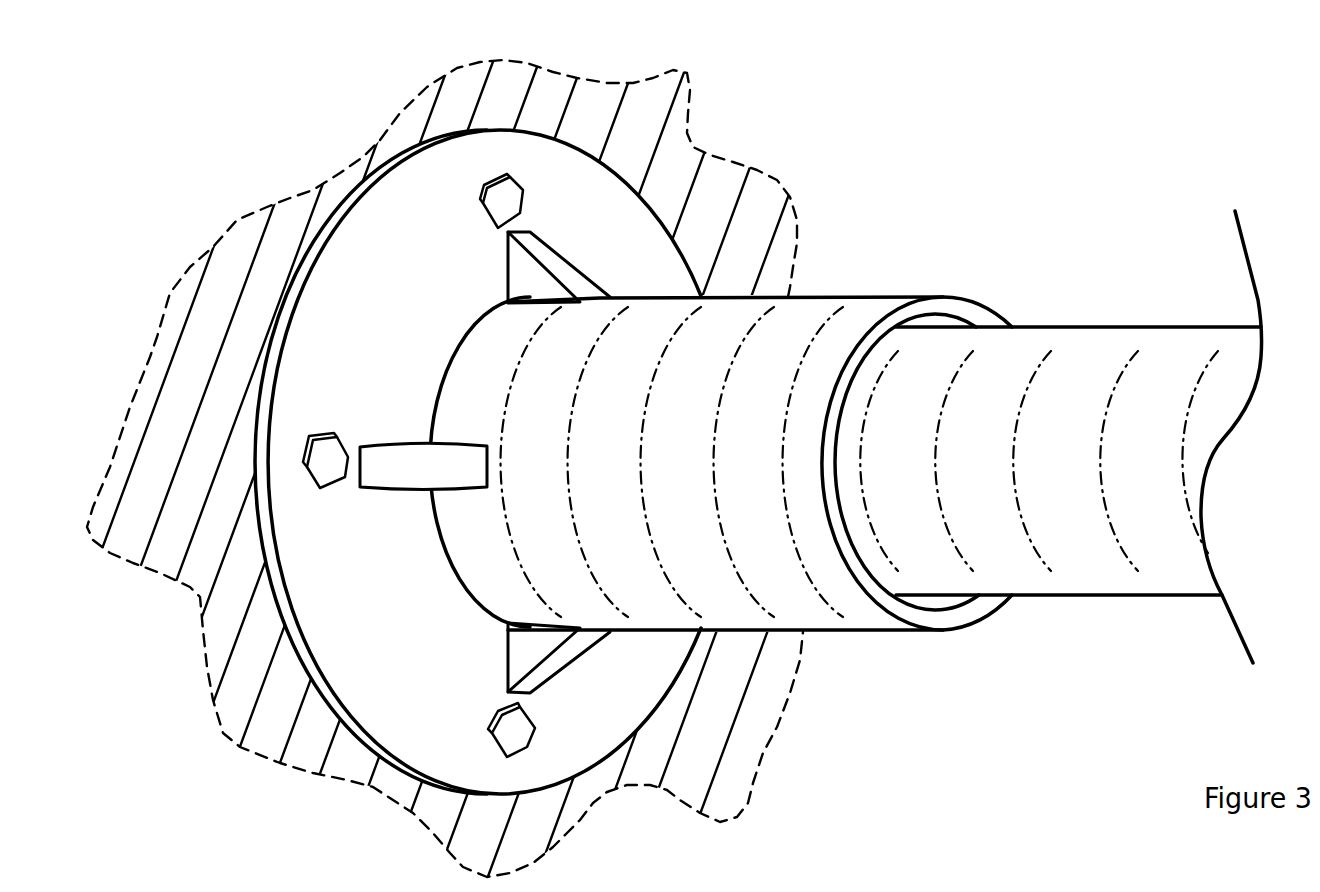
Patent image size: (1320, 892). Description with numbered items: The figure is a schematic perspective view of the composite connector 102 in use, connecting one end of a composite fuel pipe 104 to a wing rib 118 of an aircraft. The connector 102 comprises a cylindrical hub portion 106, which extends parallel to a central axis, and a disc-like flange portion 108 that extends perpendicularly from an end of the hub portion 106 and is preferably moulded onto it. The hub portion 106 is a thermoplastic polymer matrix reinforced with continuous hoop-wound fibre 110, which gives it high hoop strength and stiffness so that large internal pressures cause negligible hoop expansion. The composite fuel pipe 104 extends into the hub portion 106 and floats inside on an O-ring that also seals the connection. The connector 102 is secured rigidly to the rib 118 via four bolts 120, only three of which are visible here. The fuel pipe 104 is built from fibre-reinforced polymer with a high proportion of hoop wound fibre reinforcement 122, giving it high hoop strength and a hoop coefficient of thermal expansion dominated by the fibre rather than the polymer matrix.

The composite connector 102 is at (758, 511).
The composite fuel pipe 104 is at (1005, 582).
The hub portion 106 is at (830, 555).
The flange portion 108 is at (643, 700).
The hoop-wound fibre 110 is at (757, 337).
The wing rib 118 is at (713, 195).
The bolts 120 is at (515, 740).
The hoop wound fibre reinforcement 122 is at (1023, 482).